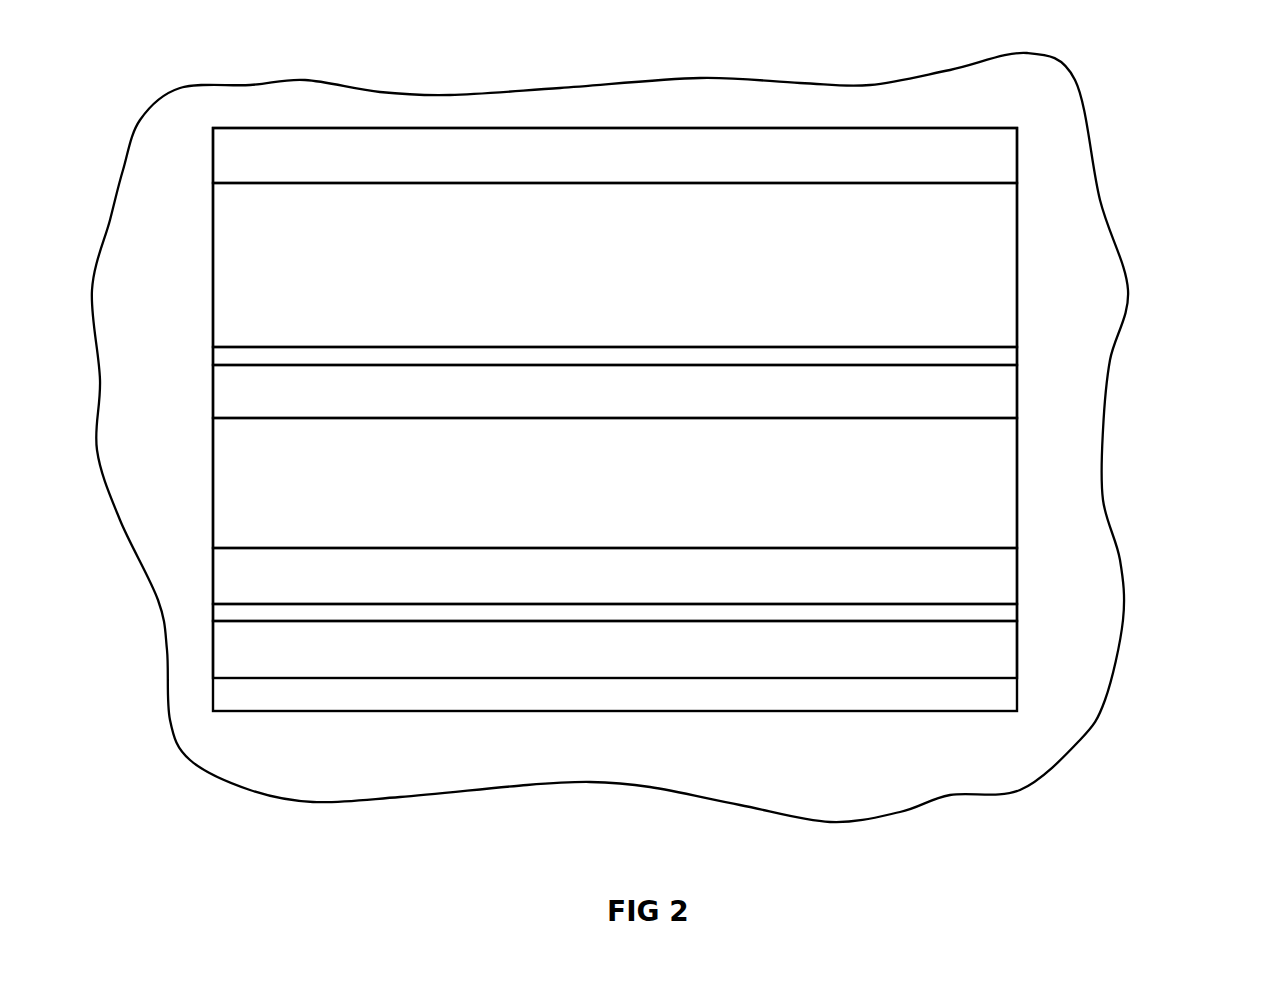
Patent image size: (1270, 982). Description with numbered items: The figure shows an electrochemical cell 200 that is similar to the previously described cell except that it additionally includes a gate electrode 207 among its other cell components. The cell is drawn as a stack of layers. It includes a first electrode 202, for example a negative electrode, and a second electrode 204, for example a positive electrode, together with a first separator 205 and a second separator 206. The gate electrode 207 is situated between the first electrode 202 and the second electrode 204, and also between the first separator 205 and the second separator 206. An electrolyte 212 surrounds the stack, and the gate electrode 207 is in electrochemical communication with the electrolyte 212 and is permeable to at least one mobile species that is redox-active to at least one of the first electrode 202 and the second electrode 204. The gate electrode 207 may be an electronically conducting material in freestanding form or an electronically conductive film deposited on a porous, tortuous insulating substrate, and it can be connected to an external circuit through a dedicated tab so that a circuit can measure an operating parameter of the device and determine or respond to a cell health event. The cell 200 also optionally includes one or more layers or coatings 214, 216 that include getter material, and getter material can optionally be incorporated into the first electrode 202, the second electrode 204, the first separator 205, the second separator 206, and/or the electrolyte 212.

The electrochemical cell 200 is at (1152, 54).
The first electrode 202 is at (998, 658).
The second electrode 204 is at (998, 271).
The first separator 205 is at (998, 579).
The second separator 206 is at (998, 403).
The gate electrode 207 is at (998, 481).
The electrolyte 212 is at (567, 110).
The layer including getter material 214 is at (998, 618).
The layer including getter material 216 is at (998, 360).